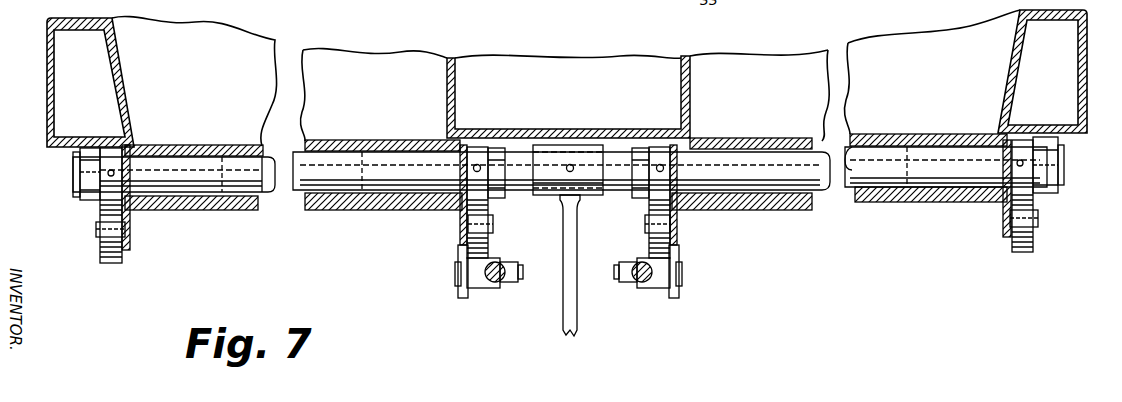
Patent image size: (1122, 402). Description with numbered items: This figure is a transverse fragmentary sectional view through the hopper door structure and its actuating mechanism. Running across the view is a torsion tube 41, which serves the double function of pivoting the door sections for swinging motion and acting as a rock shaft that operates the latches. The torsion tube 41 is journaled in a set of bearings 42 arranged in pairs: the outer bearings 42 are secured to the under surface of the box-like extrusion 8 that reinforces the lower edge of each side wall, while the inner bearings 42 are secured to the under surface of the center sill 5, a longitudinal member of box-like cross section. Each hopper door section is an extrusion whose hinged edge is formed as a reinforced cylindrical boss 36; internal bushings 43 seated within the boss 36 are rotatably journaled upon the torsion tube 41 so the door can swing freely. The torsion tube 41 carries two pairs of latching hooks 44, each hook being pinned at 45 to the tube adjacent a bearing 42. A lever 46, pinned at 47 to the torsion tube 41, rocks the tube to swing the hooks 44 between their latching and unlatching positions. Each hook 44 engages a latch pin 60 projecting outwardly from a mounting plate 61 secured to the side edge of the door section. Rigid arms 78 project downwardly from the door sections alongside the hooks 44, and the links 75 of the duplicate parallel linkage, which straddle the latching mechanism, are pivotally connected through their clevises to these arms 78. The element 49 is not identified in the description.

The center sill 5 is at (690, 78).
The box-like extrusion 8 is at (47, 78).
The cylindrical boss 36 is at (240, 205).
The torsion tube 41 is at (338, 168).
The bearings 42 is at (90, 148).
The internal bushings 43 is at (185, 207).
The latching hooks 44 is at (112, 270).
The pin 45 is at (477, 164).
The lever 46 is at (578, 318).
The pin 47 is at (570, 164).
The bolt block 49 is at (511, 292).
The latch pin 60 is at (96, 230).
The mounting plate 61 is at (130, 243).
The link 75 is at (495, 288).
The rigid arm 78 is at (463, 300).